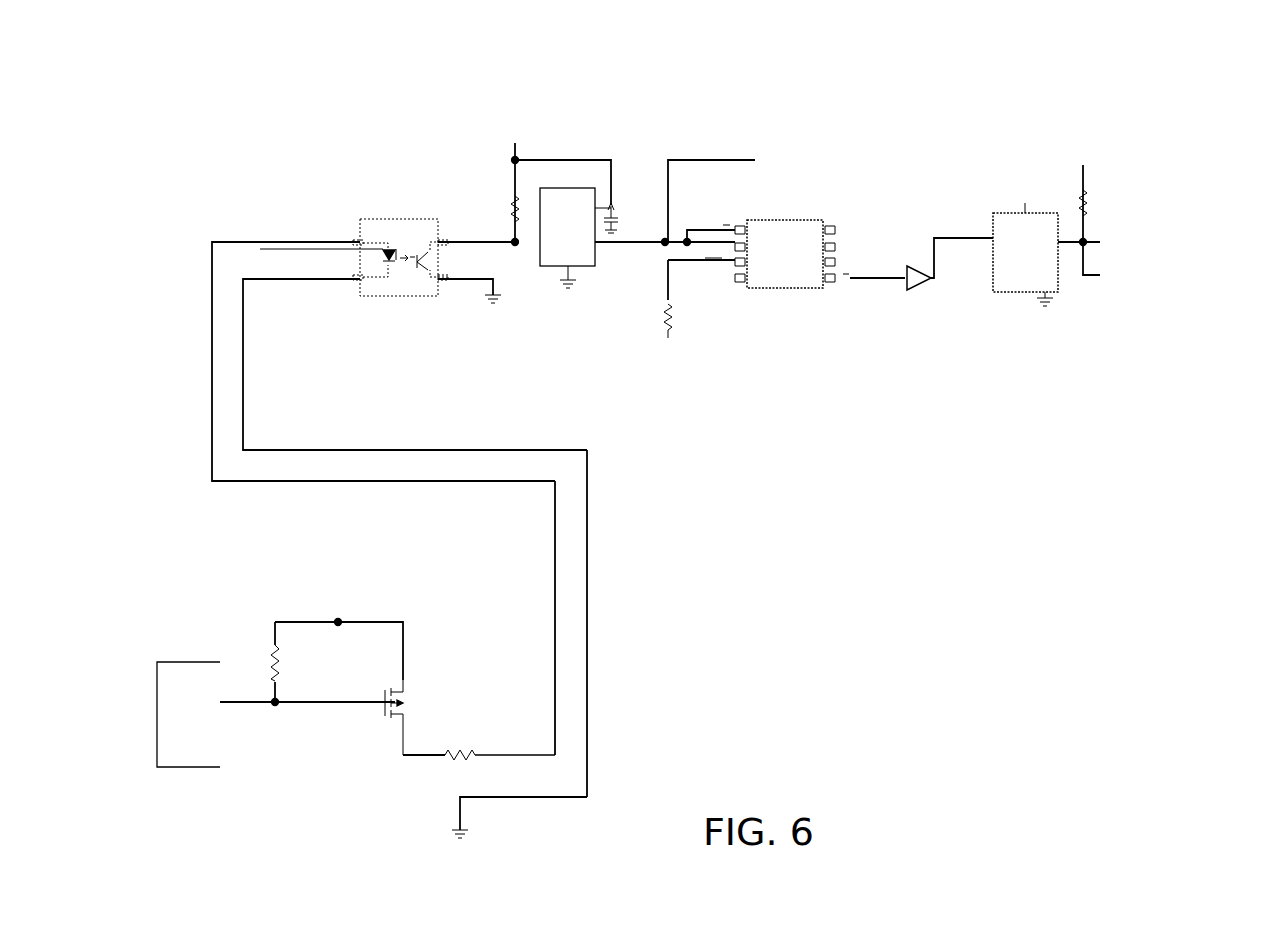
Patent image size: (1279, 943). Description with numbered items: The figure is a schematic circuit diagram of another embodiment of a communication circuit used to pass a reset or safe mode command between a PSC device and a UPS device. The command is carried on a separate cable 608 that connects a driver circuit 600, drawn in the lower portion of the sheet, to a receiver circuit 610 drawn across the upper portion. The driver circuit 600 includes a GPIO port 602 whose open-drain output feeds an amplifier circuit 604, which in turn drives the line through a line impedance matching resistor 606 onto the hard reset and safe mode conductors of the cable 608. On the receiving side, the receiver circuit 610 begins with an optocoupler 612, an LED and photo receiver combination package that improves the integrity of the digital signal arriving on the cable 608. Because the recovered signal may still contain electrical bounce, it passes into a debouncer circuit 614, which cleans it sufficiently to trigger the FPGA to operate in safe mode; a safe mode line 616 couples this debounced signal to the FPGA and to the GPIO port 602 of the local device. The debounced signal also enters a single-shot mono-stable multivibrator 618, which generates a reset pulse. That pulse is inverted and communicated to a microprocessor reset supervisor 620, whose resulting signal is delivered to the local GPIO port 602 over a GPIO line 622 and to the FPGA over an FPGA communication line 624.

The driver circuit 600 is at (160, 582).
The GPIO port 602 is at (157, 662).
The amplifier circuit 604 is at (403, 622).
The line impedance matching resistor 606 is at (448, 758).
The cable 608 is at (587, 450).
The receiver circuit 610 is at (380, 114).
The optocoupler 612 is at (360, 219).
The debouncer circuit 614 is at (586, 160).
The safe mode line 616 is at (755, 160).
The single-shot mono-stable multivibrator 618 is at (826, 218).
The microprocessor reset supervisor 620 is at (1010, 213).
The GPIO line 622 is at (1100, 242).
The FPGA communication line 624 is at (1100, 275).